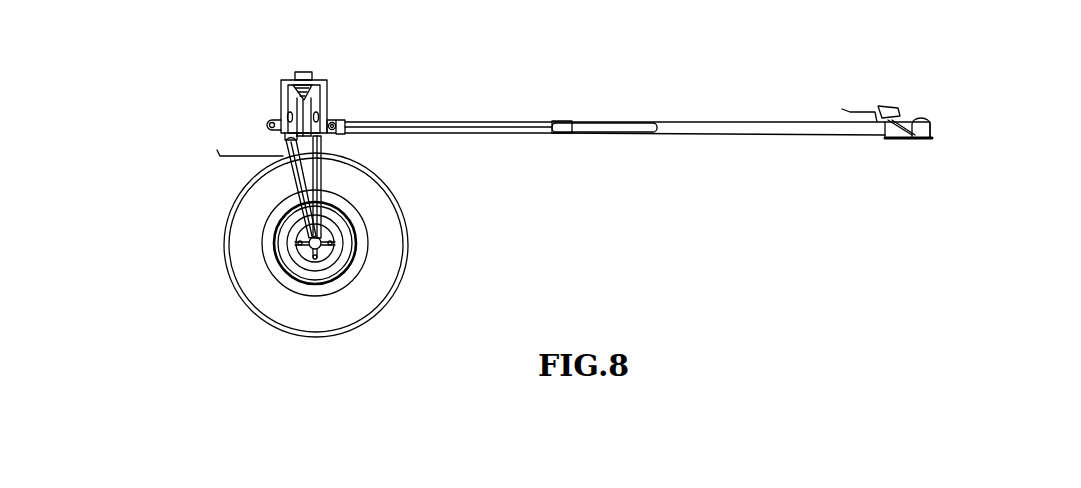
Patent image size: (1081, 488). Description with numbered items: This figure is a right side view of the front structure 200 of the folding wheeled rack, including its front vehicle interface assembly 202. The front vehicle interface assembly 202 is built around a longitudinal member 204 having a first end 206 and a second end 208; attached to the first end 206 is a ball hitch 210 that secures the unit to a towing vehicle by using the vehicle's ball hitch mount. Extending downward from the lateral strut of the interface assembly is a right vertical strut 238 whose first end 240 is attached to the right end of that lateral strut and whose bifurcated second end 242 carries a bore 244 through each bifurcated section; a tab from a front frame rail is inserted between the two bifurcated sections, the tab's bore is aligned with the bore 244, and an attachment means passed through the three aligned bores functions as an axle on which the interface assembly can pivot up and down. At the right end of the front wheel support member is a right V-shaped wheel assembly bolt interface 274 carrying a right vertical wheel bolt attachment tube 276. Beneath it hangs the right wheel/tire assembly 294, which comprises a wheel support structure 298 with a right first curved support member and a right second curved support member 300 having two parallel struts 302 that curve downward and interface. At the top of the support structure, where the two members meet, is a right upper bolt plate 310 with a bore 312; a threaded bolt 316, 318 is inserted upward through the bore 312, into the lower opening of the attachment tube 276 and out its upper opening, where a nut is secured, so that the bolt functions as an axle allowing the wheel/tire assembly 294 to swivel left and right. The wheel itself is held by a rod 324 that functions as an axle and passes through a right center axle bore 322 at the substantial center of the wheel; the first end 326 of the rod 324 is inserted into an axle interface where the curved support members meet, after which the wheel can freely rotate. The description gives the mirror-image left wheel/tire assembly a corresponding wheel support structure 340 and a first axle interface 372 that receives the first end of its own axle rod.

The front structure 200 is at (854, 245).
The front vehicle interface assembly 202 is at (615, 100).
The longitudinal member 204 is at (662, 122).
The first end 206 is at (879, 108).
The second end 208 is at (336, 124).
The ball hitch 210 is at (931, 124).
The right vertical strut 238 is at (493, 128).
The first end 240 is at (568, 133).
The bifurcated second end 242 is at (344, 131).
The bore 244 is at (331, 136).
The right V-shaped wheel assembly bolt interface 274 is at (282, 110).
The right vertical wheel bolt attachment tube 276 is at (281, 118).
The right wheel/tire assembly 294 is at (199, 321).
The wheel support structure 298 is at (208, 131).
The right second curved support member 300 is at (268, 126).
The parallel struts 302 is at (313, 196).
The right upper bolt plate 310 is at (292, 141).
The bore 312 is at (327, 112).
The threaded bolt 316 is at (363, 60).
The spring 318 is at (313, 88).
The right center axle bore 322 is at (414, 252).
The rod 324 is at (414, 252).
The first end 326 is at (326, 252).
The wheel support structure 340 is at (248, 165).
The first axle interface 372 is at (308, 243).